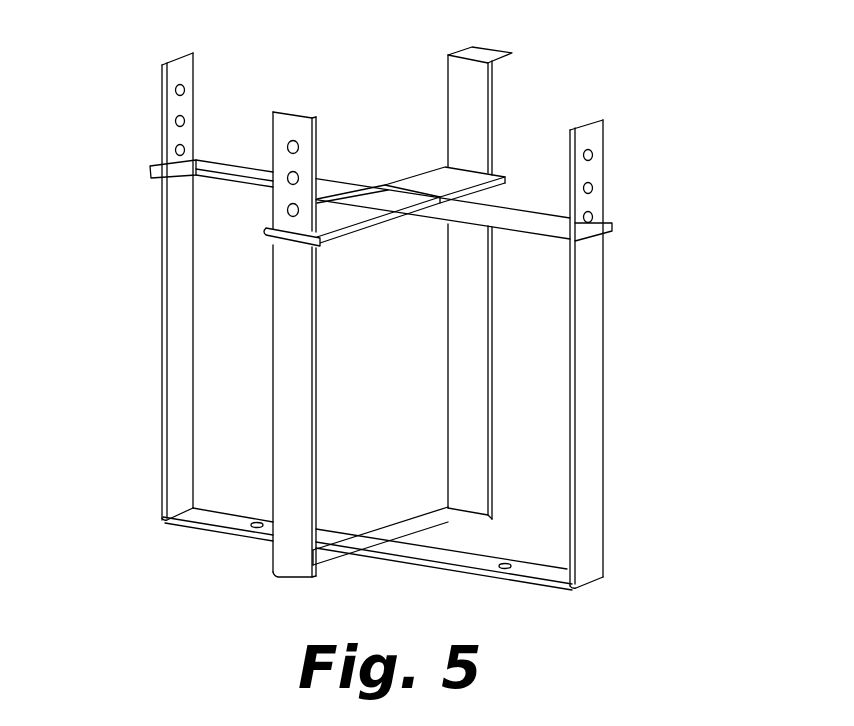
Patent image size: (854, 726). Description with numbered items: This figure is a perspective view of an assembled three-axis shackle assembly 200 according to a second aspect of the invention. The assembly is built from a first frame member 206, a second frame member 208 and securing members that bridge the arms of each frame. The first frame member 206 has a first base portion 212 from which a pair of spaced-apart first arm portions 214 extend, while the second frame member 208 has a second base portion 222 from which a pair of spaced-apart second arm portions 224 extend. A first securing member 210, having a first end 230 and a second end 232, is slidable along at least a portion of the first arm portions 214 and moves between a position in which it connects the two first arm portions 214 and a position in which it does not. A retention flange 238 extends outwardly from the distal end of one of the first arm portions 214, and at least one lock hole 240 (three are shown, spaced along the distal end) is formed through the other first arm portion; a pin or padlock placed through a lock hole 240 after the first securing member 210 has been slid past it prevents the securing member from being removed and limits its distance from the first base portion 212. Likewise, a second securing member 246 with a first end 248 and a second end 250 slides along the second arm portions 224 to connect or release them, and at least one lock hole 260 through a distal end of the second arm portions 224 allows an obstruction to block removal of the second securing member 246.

The three-axis shackle assembly 200 is at (680, 110).
The first frame member 206 is at (341, 578).
The second frame member 208 is at (160, 484).
The first securing member 210 is at (421, 166).
The first base portion 212 is at (380, 570).
The first arm portions 214 is at (472, 290).
The second base portion 222 is at (201, 524).
The second arm portions 224 is at (163, 381).
The first end 230 is at (292, 243).
The second end 232 is at (475, 182).
The retention flange 238 is at (487, 52).
The lock hole 240 is at (297, 175).
The second securing member 246 is at (237, 160).
The first end 248 is at (533, 220).
The second end 250 is at (190, 168).
The lock hole 260 is at (176, 122).